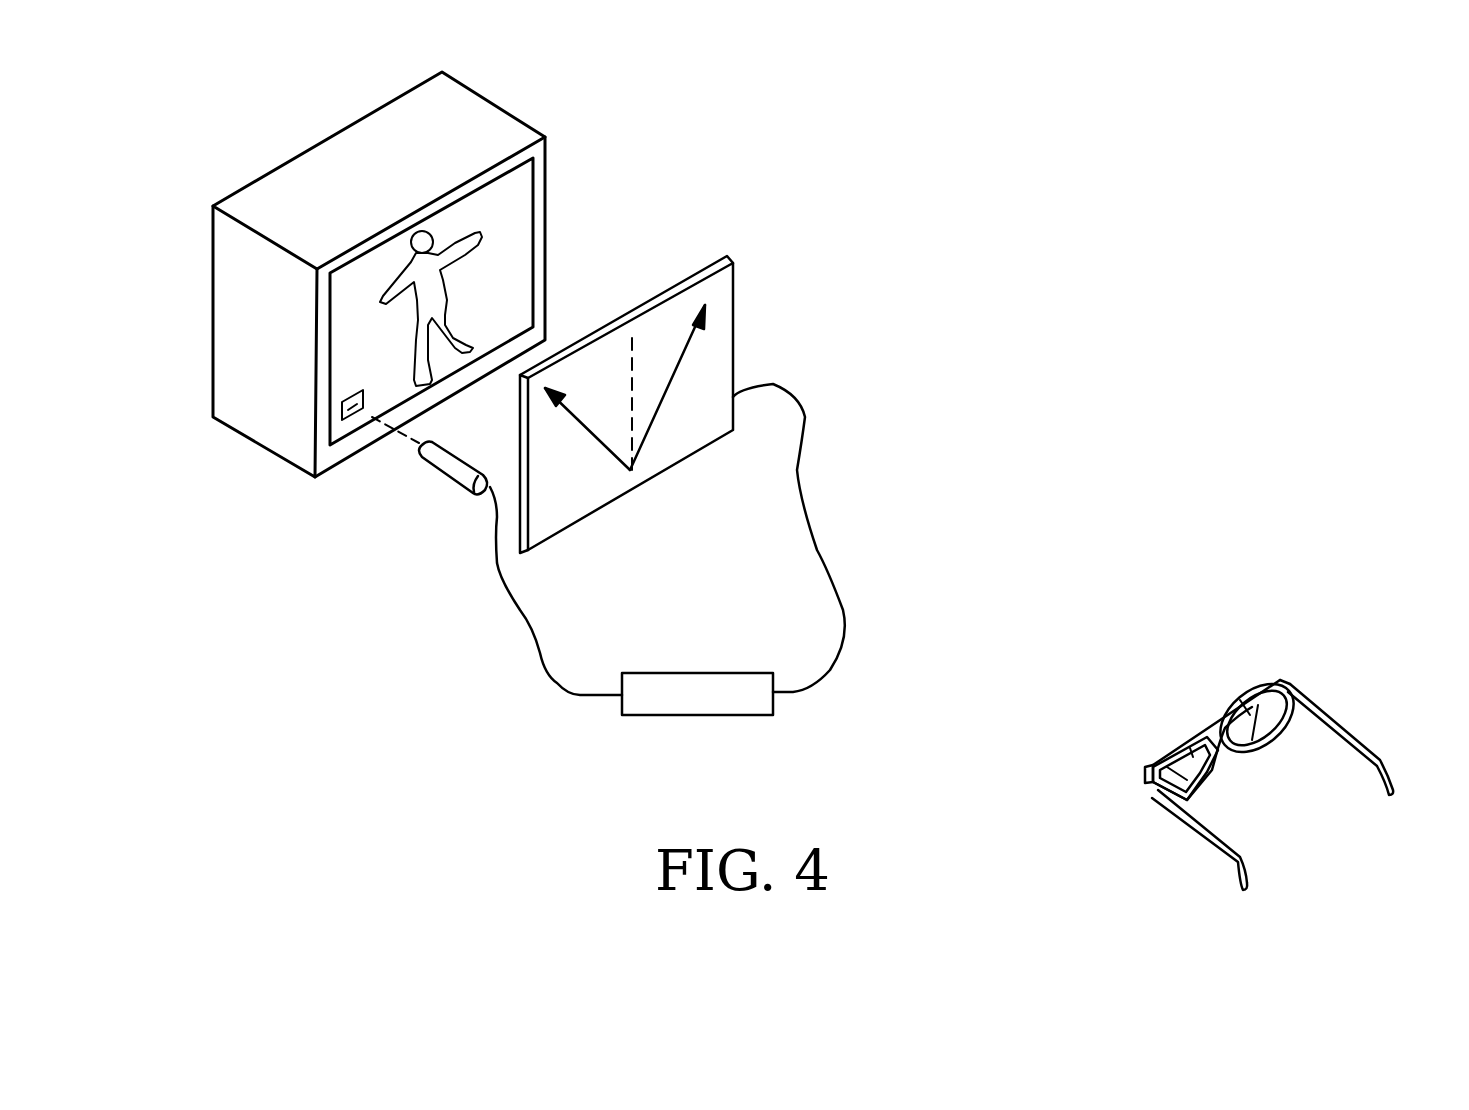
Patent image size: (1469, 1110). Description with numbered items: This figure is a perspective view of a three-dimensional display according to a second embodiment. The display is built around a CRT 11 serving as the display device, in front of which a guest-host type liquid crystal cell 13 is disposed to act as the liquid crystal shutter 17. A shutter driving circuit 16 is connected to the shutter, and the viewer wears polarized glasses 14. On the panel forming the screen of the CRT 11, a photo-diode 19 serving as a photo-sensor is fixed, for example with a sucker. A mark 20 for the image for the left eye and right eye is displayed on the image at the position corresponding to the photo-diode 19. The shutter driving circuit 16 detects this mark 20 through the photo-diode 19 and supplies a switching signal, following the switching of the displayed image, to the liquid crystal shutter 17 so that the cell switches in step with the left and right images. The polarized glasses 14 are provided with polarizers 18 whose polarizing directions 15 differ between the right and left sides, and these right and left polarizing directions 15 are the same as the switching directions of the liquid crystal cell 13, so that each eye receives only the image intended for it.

The CRT 11 is at (477, 115).
The liquid crystal cell 13 is at (702, 401).
The polarized glasses 14 is at (1343, 728).
The polarizing directions 15 is at (600, 447).
The shutter driving circuit 16 is at (688, 702).
The liquid crystal shutter 17 is at (700, 443).
The polarizers 18 is at (1242, 713).
The photo-diode 19 is at (453, 490).
The mark 20 is at (350, 423).